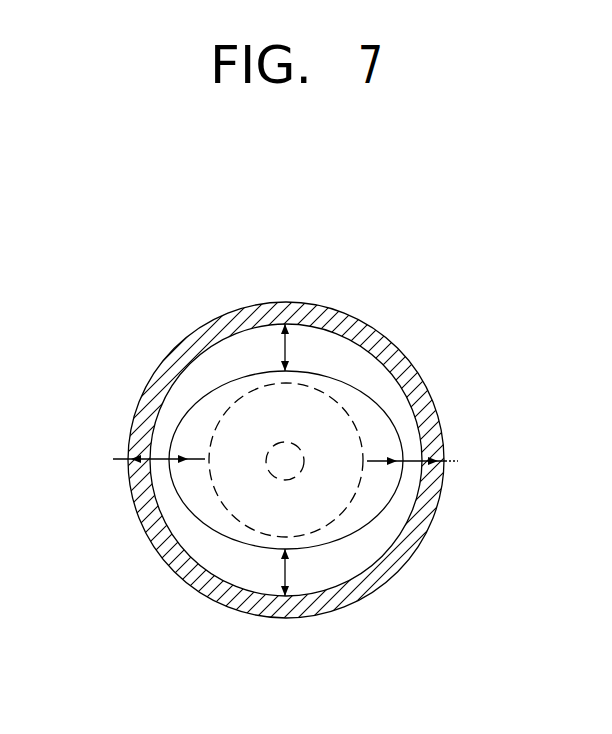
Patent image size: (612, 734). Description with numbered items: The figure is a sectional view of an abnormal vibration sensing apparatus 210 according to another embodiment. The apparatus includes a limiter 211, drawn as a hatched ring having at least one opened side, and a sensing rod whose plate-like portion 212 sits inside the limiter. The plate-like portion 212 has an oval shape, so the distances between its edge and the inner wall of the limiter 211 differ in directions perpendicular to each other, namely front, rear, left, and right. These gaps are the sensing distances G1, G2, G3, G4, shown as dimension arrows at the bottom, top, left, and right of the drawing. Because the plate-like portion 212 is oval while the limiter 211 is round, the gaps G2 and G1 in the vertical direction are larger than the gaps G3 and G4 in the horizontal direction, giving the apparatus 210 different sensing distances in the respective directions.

The abnormal vibration sensing apparatus 210 is at (144, 284).
The limiter 211 is at (145, 393).
The plate-like portion 212 is at (204, 493).
The sensing distance G1 is at (288, 572).
The sensing distance G2 is at (289, 348).
The sensing distance G3 is at (146, 458).
The sensing distance G4 is at (422, 458).